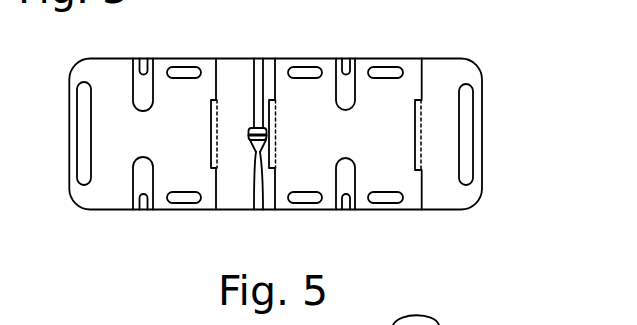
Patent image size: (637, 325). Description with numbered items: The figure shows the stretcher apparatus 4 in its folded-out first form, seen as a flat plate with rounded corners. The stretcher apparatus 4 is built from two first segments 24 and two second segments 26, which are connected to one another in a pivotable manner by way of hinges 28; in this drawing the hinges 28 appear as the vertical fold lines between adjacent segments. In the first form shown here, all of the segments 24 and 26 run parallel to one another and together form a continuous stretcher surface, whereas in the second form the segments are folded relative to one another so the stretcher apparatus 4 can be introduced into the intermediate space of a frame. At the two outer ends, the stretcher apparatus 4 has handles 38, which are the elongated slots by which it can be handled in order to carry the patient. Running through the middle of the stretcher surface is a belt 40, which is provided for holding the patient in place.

The stretcher apparatus 4 is at (500, 73).
The first segment 24 is at (235, 198).
The second segment 26 is at (108, 198).
The hinge 28 is at (216, 72).
The handle 38 is at (82, 120).
The belt 40 is at (257, 74).